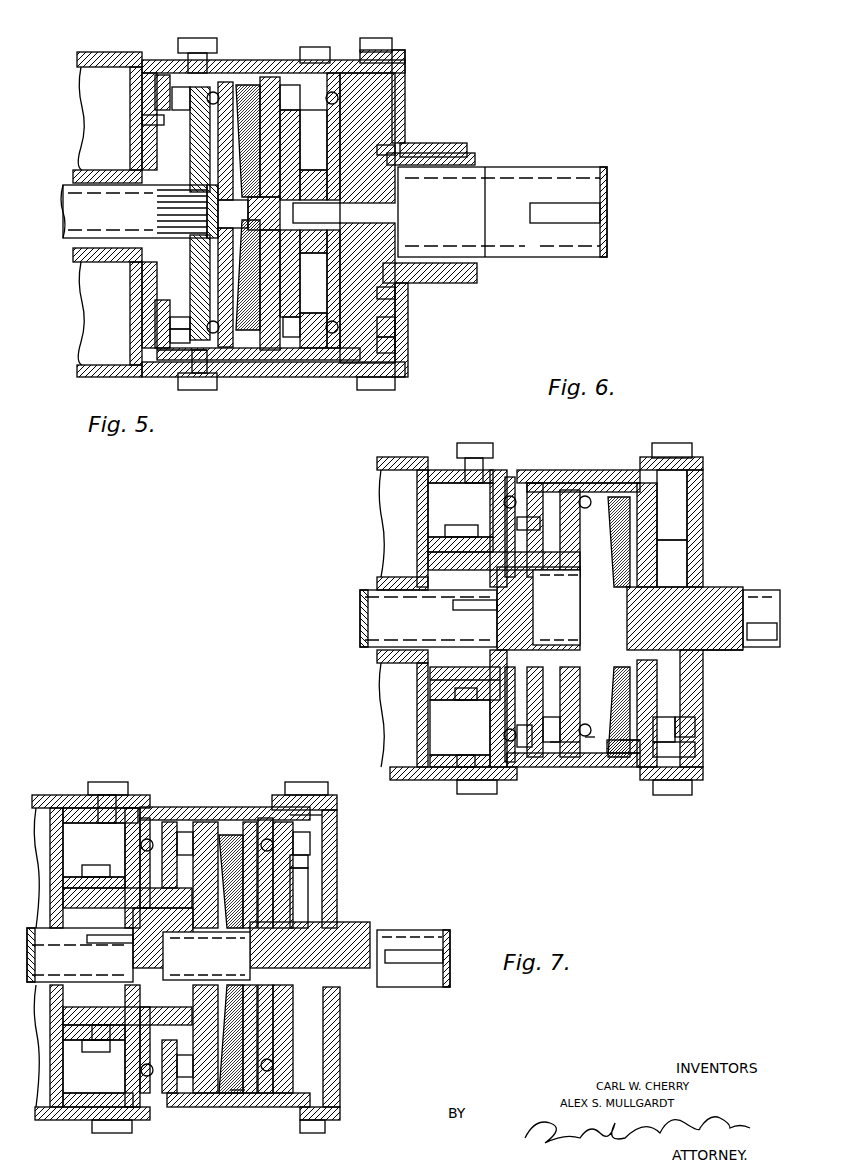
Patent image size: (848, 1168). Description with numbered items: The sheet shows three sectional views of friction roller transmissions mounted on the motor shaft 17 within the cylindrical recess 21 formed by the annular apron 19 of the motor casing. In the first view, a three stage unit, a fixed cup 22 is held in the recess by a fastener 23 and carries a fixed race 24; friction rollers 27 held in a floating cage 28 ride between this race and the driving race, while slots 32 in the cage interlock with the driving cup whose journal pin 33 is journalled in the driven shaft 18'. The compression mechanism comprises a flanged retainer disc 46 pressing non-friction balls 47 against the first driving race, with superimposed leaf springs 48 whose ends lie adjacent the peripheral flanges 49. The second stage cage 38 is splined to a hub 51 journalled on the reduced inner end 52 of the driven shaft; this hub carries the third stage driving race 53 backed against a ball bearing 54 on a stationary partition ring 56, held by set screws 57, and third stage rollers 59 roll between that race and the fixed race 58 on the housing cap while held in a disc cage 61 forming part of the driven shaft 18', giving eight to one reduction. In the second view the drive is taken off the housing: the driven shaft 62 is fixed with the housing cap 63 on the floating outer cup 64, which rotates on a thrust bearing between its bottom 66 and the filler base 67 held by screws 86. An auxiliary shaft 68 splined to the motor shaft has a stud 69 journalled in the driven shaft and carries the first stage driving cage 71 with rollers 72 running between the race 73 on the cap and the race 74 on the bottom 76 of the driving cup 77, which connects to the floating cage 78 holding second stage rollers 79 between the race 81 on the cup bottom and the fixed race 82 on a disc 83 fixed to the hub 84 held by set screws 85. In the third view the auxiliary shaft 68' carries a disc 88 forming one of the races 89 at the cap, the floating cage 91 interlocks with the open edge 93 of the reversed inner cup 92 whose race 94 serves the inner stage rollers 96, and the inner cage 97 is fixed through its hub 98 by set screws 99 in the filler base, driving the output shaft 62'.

In FIG. 5, the motor shaft 17 is at (115, 211).
In FIG. 6, the motor shaft 17 is at (360, 605).
In FIG. 7, the motor shaft 17 is at (80, 955).
In FIG. 5, the driven shaft 18' is at (502, 189).
In FIG. 5, the annular apron 19 is at (138, 55).
In FIG. 6, the annular apron 19 is at (420, 458).
In FIG. 7, the annular apron 19 is at (53, 795).
In FIG. 5, the cylindrical recess 21 is at (173, 60).
In FIG. 6, the cylindrical recess 21 is at (495, 466).
In FIG. 7, the cylindrical recess 21 is at (74, 808).
In FIG. 5, the cup 22 is at (148, 78).
In FIG. 5, the pin 23 is at (142, 122).
In FIG. 5, the fixed race 24 is at (157, 100).
In FIG. 5, the friction rollers 27 is at (170, 341).
In FIG. 5, the floating cage 28 is at (170, 323).
In FIG. 5, the slots 32 is at (174, 352).
In FIG. 5, the journal pin 33 is at (316, 213).
In FIG. 5, the cage of the second stage 38 is at (288, 85).
In FIG. 5, the flanged retainer disc 46 is at (200, 93).
In FIG. 5, the non-friction balls 47 is at (246, 331).
In FIG. 5, the leaf springs 48 is at (271, 346).
In FIG. 5, the peripheral flanges 49 is at (236, 93).
In FIG. 5, the hub 51 is at (313, 248).
In FIG. 5, the reduced inner end 52 is at (313, 174).
In FIG. 5, the third stage driving race 53 is at (343, 348).
In FIG. 5, the ball bearing 54 is at (318, 346).
In FIG. 5, the stationary partition ring 56 is at (288, 341).
In FIG. 5, the set screws 57 is at (316, 47).
In FIG. 5, the fixed race 58 is at (395, 327).
In FIG. 5, the third stage rollers 59 is at (395, 339).
In FIG. 5, the disc cage 61 is at (395, 295).
In FIG. 6, the driven shaft 62 is at (761, 603).
In FIG. 7, the driven shaft 62' is at (413, 970).
In FIG. 6, the housing cap 63 is at (696, 556).
In FIG. 7, the housing cap 63 is at (335, 990).
In FIG. 6, the outer cup 64 is at (603, 470).
In FIG. 7, the outer cup 64 is at (227, 806).
In FIG. 6, the bottom 66 is at (518, 496).
In FIG. 6, the filler base 67 is at (465, 443).
In FIG. 7, the filler base 67 is at (125, 851).
In FIG. 6, the auxiliary shaft 68 is at (560, 607).
In FIG. 7, the auxiliary shaft 68' is at (191, 944).
In FIG. 6, the stud 69 is at (712, 648).
In FIG. 6, the first stage driving cage 71 is at (675, 754).
In FIG. 6, the rollers 72 is at (675, 737).
In FIG. 6, the race 73 is at (690, 720).
In FIG. 6, the race 74 is at (644, 748).
In FIG. 6, the bottom 76 is at (646, 550).
In FIG. 6, the driving cup 77 is at (575, 480).
In FIG. 6, the floating cage 78 is at (553, 543).
In FIG. 6, the second stage rollers 79 is at (555, 747).
In FIG. 6, the race 81 is at (541, 747).
In FIG. 6, the fixed race 82 is at (573, 745).
In FIG. 6, the disc 83 is at (588, 741).
In FIG. 6, the hub 84 is at (430, 680).
In FIG. 6, the set screws 85 is at (462, 527).
In FIG. 6, the screws 86 is at (475, 794).
In FIG. 7, the disc 88 is at (299, 900).
In FIG. 7, the races 89 is at (295, 832).
In FIG. 7, the cage 91 is at (309, 887).
In FIG. 7, the inner cup 92 is at (235, 1090).
In FIG. 7, the open edge 93 is at (323, 830).
In FIG. 7, the race 94 is at (212, 834).
In FIG. 7, the rollers 96 is at (184, 832).
In FIG. 7, the cage 97 is at (188, 1078).
In FIG. 7, the hub 98 is at (63, 1016).
In FIG. 7, the set screws 99 is at (100, 1052).